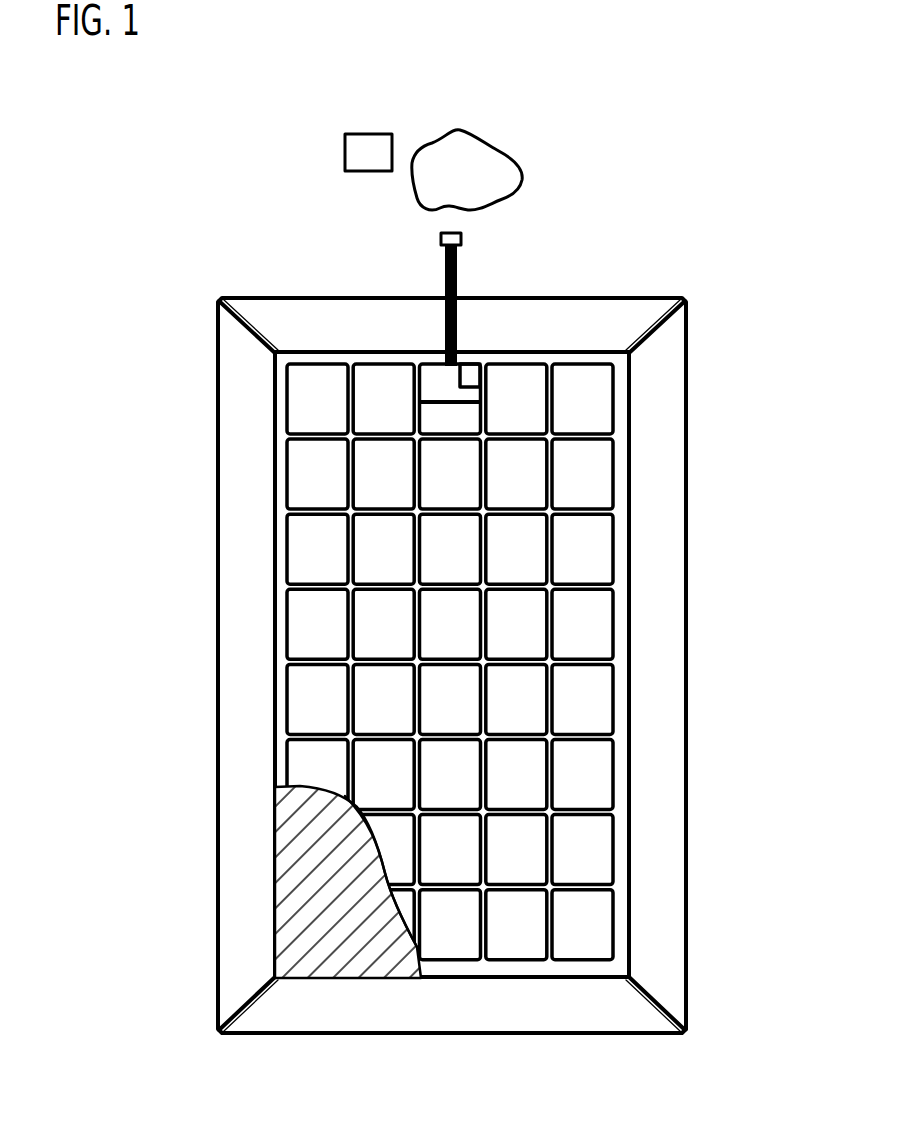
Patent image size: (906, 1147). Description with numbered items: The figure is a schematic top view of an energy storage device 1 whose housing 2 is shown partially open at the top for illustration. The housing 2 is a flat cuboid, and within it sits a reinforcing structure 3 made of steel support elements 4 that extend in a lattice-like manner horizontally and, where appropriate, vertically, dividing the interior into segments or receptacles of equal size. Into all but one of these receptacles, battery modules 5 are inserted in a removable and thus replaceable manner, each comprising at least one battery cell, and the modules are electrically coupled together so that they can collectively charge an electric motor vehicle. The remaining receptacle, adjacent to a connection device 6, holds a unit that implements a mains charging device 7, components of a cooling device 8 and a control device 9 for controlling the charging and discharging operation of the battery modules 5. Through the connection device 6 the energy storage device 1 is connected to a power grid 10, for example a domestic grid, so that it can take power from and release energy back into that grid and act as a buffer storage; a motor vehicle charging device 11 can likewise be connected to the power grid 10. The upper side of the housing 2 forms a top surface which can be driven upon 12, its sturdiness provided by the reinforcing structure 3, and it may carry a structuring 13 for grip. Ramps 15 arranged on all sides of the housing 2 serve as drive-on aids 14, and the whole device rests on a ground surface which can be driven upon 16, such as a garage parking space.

The energy storage device 1 is at (712, 165).
The housing 2 is at (625, 393).
The reinforcing structure 3 is at (562, 685).
The steel support elements 4 is at (545, 643).
The battery modules 5 is at (592, 565).
The connection device 6 is at (458, 270).
The mains charging device 7 is at (438, 383).
The cooling device 8 is at (430, 413).
The control device 9 is at (470, 378).
The power grid 10 is at (485, 168).
The motor vehicle charging device 11 is at (377, 133).
The top surface which can be driven upon 12 is at (329, 884).
The structuring 13 is at (305, 950).
The drive-on aids 14 is at (673, 972).
The ramps 15 is at (662, 860).
The ground surface which can be driven upon 16 is at (177, 674).